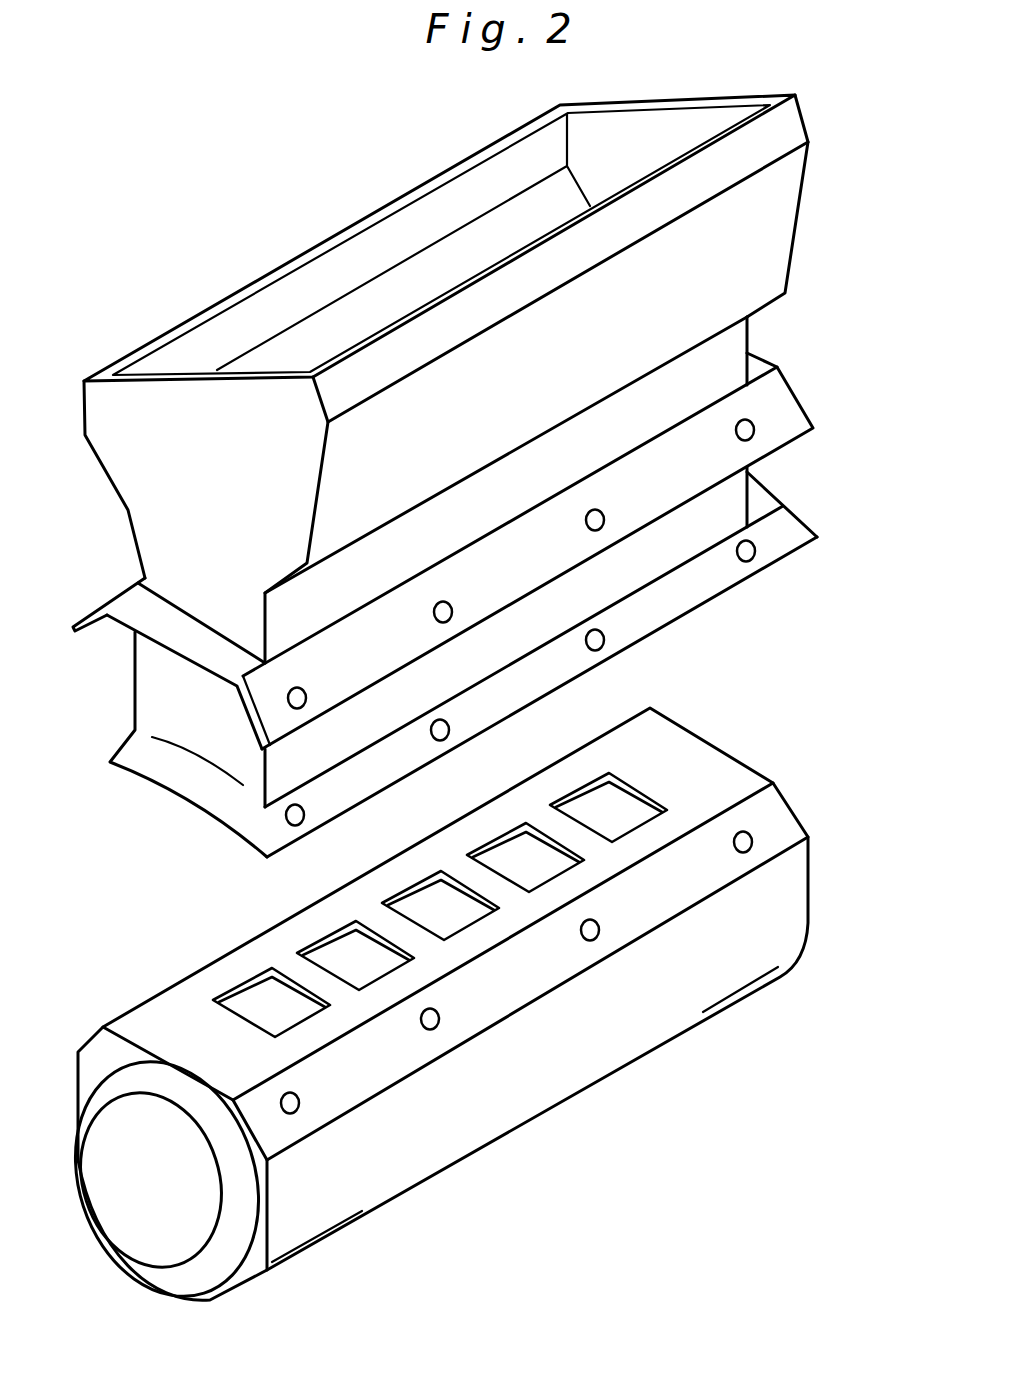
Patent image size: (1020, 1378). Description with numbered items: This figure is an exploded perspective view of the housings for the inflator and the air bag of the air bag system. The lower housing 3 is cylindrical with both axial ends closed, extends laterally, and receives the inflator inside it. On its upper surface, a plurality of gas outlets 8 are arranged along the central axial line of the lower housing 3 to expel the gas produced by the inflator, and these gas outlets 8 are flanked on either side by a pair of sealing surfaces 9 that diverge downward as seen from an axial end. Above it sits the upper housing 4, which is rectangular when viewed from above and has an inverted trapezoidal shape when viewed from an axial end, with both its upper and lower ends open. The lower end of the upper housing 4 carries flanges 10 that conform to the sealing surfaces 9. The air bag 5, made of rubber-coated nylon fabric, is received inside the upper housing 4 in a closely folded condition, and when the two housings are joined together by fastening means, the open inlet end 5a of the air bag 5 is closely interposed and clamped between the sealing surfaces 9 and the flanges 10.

The lower housing 3 is at (802, 913).
The upper housing 4 is at (782, 233).
The air bag 5 is at (728, 503).
The open inlet end of the air bag 5a is at (733, 588).
The gas outlets 8 is at (253, 1020).
The sealing surfaces 9 is at (781, 820).
The flanges 10 is at (788, 402).